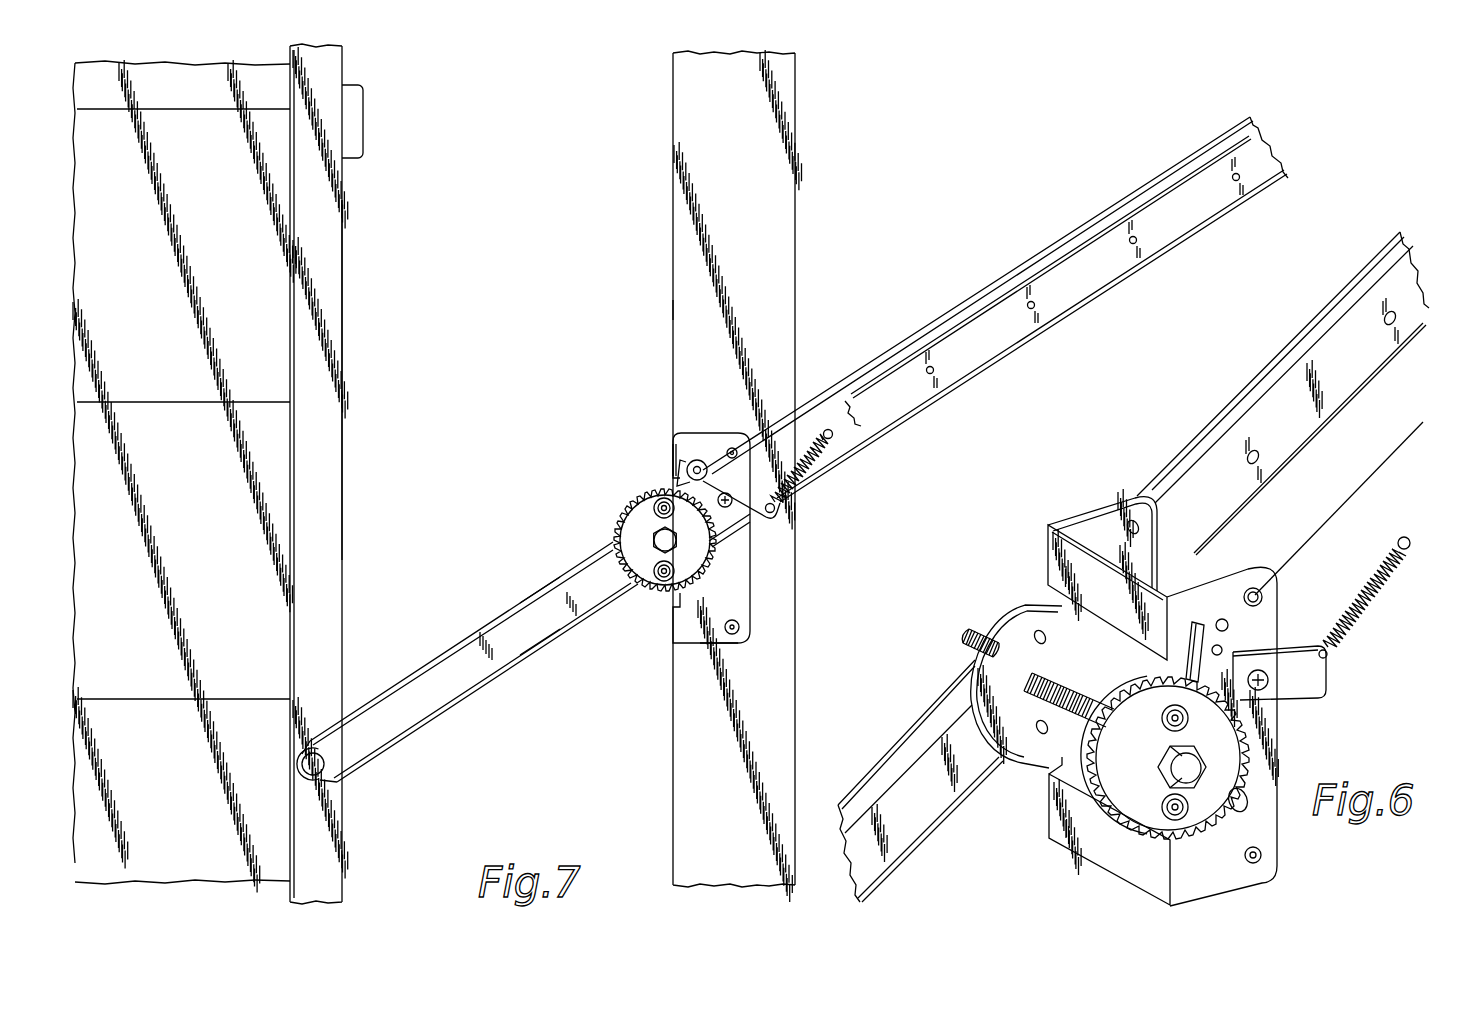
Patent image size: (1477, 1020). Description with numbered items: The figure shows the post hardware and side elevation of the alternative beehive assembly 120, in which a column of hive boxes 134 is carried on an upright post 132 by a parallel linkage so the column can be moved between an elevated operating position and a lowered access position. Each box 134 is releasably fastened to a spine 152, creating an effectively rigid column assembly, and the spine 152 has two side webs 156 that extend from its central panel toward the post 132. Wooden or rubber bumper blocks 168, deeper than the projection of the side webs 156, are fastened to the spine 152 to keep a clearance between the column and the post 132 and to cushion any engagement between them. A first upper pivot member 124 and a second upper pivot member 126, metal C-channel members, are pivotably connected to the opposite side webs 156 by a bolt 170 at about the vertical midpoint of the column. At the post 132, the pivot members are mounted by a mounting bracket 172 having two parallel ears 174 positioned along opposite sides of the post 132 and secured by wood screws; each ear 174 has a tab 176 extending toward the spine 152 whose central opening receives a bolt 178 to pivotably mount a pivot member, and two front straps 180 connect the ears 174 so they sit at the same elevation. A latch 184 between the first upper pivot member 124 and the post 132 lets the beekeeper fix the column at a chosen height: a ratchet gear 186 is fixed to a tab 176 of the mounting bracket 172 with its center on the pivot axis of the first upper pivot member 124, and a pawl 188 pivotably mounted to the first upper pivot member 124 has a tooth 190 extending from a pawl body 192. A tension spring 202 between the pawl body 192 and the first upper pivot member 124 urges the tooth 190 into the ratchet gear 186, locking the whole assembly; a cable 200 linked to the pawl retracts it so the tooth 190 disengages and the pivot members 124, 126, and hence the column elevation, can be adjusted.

In FIG. 7, the beehive assembly 120 is at (484, 160).
In FIG. 7, the first upper pivot member 124 is at (458, 640).
In FIG. 7, the second upper pivot member 126 is at (568, 566).
In FIG. 6, the second upper pivot member 126 is at (893, 748).
In FIG. 7, the upright post 132 is at (797, 200).
In FIG. 7, the box 134 is at (161, 359).
In FIG. 7, the spine 152 is at (345, 385).
In FIG. 7, the side webs 156 is at (342, 287).
In FIG. 7, the bumper blocks 168 is at (365, 118).
In FIG. 7, the bolt 170 is at (318, 774).
In FIG. 7, the mounting bracket 172 is at (718, 648).
In FIG. 7, the ear 174 is at (752, 573).
In FIG. 6, the ear 174 is at (1137, 498).
In FIG. 7, the tab 176 is at (622, 514).
In FIG. 6, the tab 176 is at (1005, 615).
In FIG. 7, the bolt 178 is at (655, 533).
In FIG. 6, the bolt 178 is at (1200, 785).
In FIG. 7, the front strap 180 is at (658, 447).
In FIG. 6, the front strap 180 is at (1082, 603).
In FIG. 7, the latch 184 is at (686, 418).
In FIG. 6, the latch 184 is at (1073, 492).
In FIG. 7, the ratchet gear 186 is at (647, 585).
In FIG. 6, the ratchet gear 186 is at (1168, 822).
In FIG. 7, the pawl 188 is at (698, 460).
In FIG. 6, the pawl 188 is at (1262, 688).
In FIG. 6, the pawl tooth 190 is at (1193, 693).
In FIG. 6, the pawl body 192 is at (1290, 650).
In FIG. 7, the cable 200 is at (932, 321).
In FIG. 6, the cable 200 is at (1345, 498).
In FIG. 7, the tension spring 202 is at (805, 476).
In FIG. 6, the tension spring 202 is at (1365, 618).